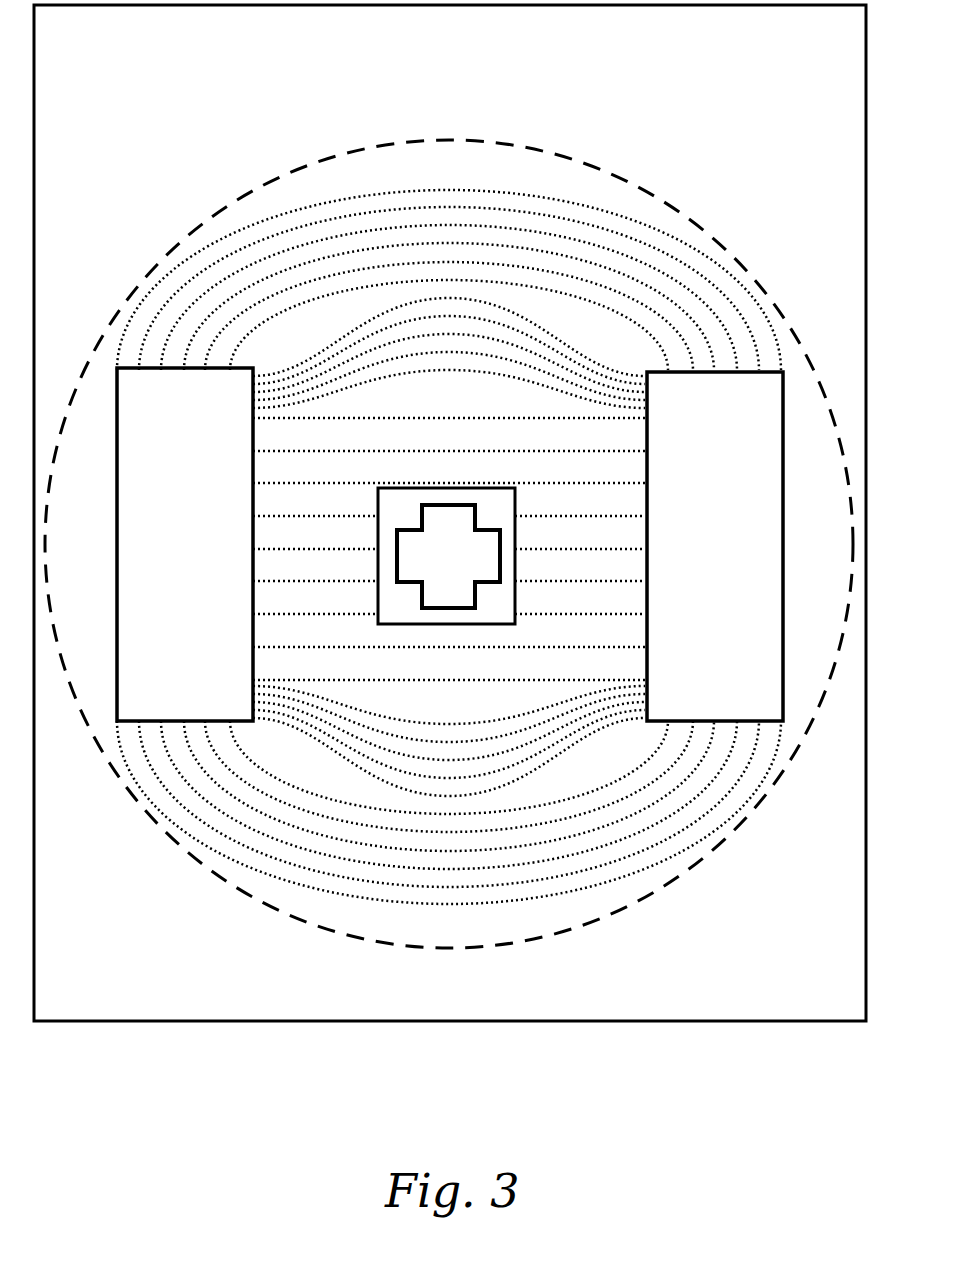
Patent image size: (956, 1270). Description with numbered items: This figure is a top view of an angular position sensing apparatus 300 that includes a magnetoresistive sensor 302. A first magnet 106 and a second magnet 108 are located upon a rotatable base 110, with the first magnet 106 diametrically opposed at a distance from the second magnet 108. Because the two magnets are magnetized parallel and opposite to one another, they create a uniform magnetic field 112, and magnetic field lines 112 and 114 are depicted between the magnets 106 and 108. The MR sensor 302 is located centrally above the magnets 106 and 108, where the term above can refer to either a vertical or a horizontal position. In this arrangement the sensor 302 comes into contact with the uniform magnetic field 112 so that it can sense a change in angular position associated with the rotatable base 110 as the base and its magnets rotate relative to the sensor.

The angular position sensing apparatus 300 is at (124, 50).
The rotatable base 110 is at (592, 162).
The uniform magnetic field 112 is at (462, 178).
The magnetic field lines 114 is at (434, 402).
The first magnet 106 is at (200, 549).
The second magnet 108 is at (737, 549).
The magnetoresistive (MR) sensor 302 is at (468, 564).